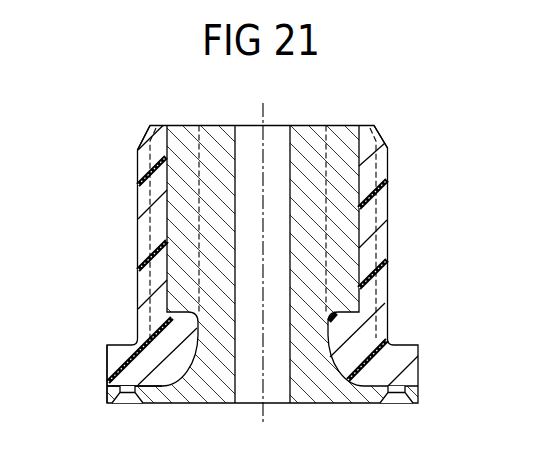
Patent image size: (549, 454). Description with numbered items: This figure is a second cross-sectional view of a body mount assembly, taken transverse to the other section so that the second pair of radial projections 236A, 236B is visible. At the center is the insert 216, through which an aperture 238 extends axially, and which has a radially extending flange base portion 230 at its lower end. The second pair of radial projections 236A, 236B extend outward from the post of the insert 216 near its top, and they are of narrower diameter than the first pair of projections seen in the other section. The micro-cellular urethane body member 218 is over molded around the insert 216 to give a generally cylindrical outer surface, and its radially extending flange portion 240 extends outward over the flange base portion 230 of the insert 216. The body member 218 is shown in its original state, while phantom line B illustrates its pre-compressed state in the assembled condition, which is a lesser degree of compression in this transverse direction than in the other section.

The insert 216 is at (368, 230).
The micro-cellular urethane body member 218 is at (126, 108).
The flange base portion 230 is at (407, 390).
The radial projection 236A is at (180, 155).
The radial projection 236B is at (347, 142).
The aperture 238 is at (287, 142).
The flange portion 240 is at (113, 360).
The phantom line B is at (137, 219).